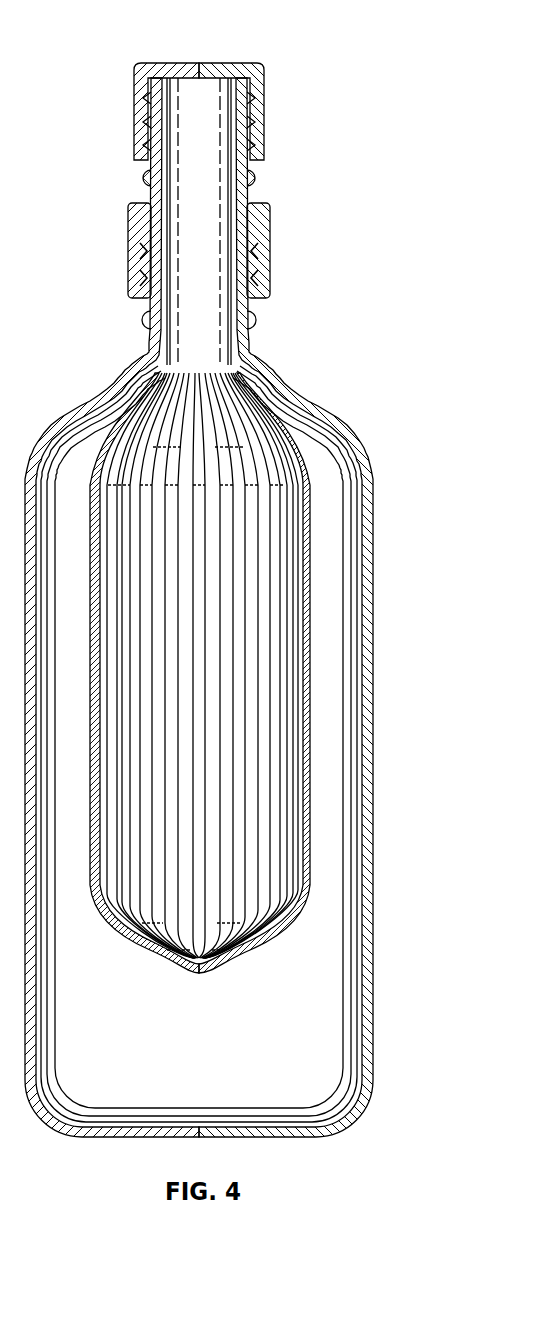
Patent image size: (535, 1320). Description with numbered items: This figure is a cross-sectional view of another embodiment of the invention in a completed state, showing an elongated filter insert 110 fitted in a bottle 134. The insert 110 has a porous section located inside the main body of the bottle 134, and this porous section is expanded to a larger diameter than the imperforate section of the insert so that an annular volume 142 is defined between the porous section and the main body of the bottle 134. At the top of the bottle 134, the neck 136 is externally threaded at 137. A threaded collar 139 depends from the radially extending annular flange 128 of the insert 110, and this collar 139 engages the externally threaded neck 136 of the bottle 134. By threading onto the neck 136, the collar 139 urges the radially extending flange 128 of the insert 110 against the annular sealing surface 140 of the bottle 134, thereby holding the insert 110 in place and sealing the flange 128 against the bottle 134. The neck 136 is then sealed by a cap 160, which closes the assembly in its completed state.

The elongated filter insert 110 is at (152, 374).
The radially extending annular flange 128 is at (141, 200).
The bottle 134 is at (314, 403).
The neck 136 is at (141, 316).
The external threads 137 is at (139, 281).
The threaded collar 139 is at (273, 276).
The annular sealing surface 140 is at (264, 206).
The annular volume 142 is at (218, 1058).
The cap 160 is at (226, 63).